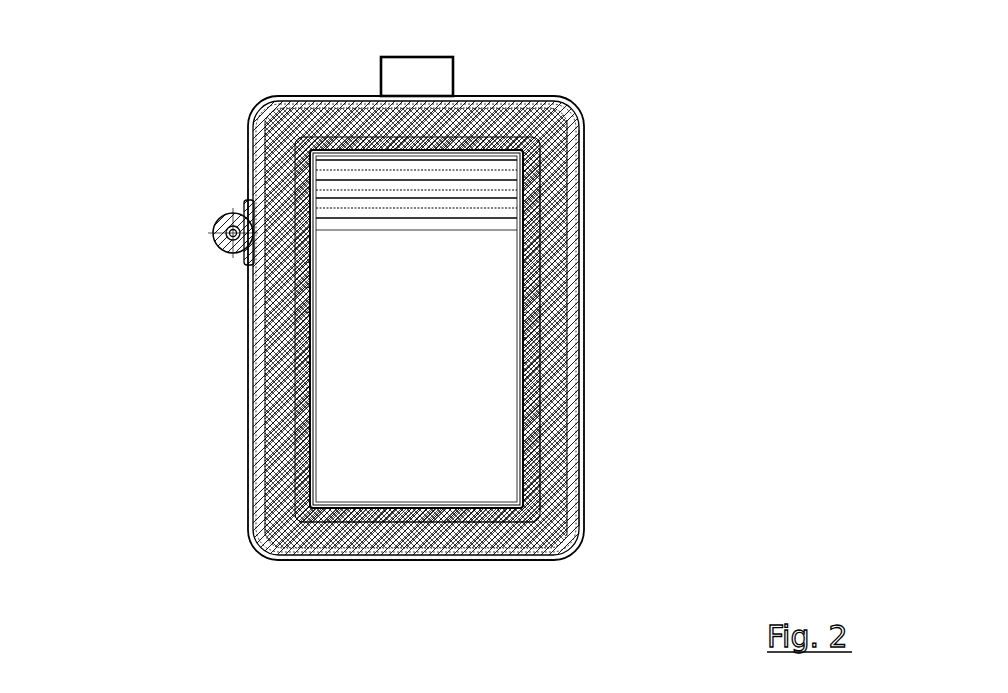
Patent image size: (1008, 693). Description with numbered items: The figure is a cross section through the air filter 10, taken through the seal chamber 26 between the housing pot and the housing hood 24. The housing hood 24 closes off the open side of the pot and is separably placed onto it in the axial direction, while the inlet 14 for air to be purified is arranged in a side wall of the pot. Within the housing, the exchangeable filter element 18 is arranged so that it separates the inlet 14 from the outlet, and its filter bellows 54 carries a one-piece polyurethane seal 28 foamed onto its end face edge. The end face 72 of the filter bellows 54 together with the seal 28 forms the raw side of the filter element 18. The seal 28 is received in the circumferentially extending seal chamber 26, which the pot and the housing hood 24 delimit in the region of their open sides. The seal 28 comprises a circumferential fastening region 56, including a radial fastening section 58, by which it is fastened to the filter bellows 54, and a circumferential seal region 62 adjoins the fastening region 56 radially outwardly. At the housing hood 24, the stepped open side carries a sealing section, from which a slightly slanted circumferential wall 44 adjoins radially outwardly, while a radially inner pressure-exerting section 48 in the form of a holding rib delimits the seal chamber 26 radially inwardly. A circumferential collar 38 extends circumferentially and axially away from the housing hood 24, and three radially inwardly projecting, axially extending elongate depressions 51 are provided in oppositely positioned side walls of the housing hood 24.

The air filter 10 is at (403, 336).
The inlet 14 is at (432, 71).
The filter element 18 is at (490, 253).
The housing hood 24 is at (253, 172).
The seal chamber 26 is at (567, 282).
The seal 28 is at (279, 273).
The collar 38 is at (578, 375).
The circumferential wall 44 is at (573, 170).
The inner pressure-exerting section 48 is at (533, 411).
The elongate depressions 51 is at (302, 283).
The filter bellows 54 is at (439, 307).
The fastening region 56 is at (508, 521).
The radial fastening section 58 is at (542, 467).
The seal region 62 is at (275, 490).
The end face 72 is at (353, 320).